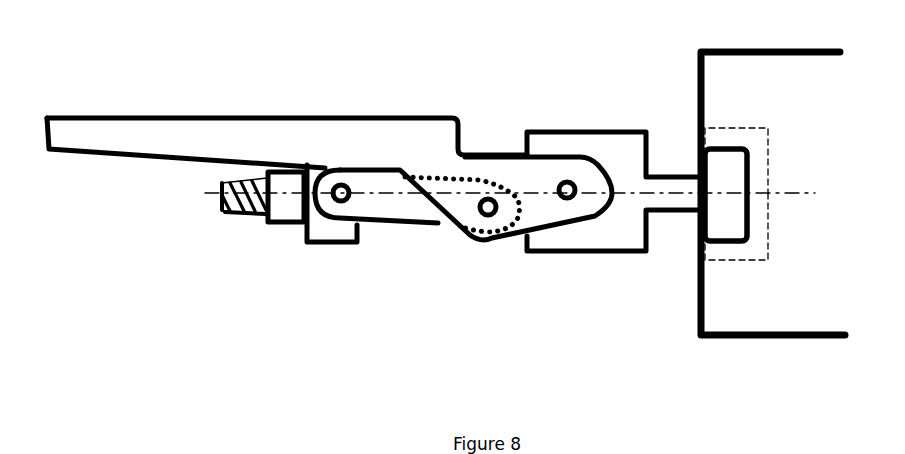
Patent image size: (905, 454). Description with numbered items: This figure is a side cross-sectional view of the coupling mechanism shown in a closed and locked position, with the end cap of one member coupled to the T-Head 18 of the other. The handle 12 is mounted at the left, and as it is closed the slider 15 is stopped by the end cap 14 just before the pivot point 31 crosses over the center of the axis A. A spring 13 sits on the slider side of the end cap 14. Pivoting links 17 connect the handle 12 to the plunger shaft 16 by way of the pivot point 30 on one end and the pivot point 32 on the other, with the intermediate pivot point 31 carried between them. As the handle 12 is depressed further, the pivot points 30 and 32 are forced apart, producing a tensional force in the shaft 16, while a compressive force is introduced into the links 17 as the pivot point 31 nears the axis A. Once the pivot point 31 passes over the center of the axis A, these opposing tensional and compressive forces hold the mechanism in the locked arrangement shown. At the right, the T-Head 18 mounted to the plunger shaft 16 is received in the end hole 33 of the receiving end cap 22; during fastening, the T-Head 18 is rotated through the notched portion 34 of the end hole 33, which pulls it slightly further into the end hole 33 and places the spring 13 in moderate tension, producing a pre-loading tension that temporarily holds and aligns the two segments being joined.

The handle 12 is at (102, 112).
The spring 13 is at (232, 220).
The end cap 14 is at (285, 177).
The slider 15 is at (305, 232).
The plunger shaft 16 is at (677, 220).
The links 17 is at (420, 235).
The T-Head 18 is at (747, 201).
The receiving end cap 22 is at (690, 70).
The pivot point 30 is at (340, 207).
The pivot point 31 is at (483, 240).
The pivot point 32 is at (567, 200).
The end hole 33 is at (770, 158).
The notched portion 34 is at (747, 247).
The axis A is at (197, 195).